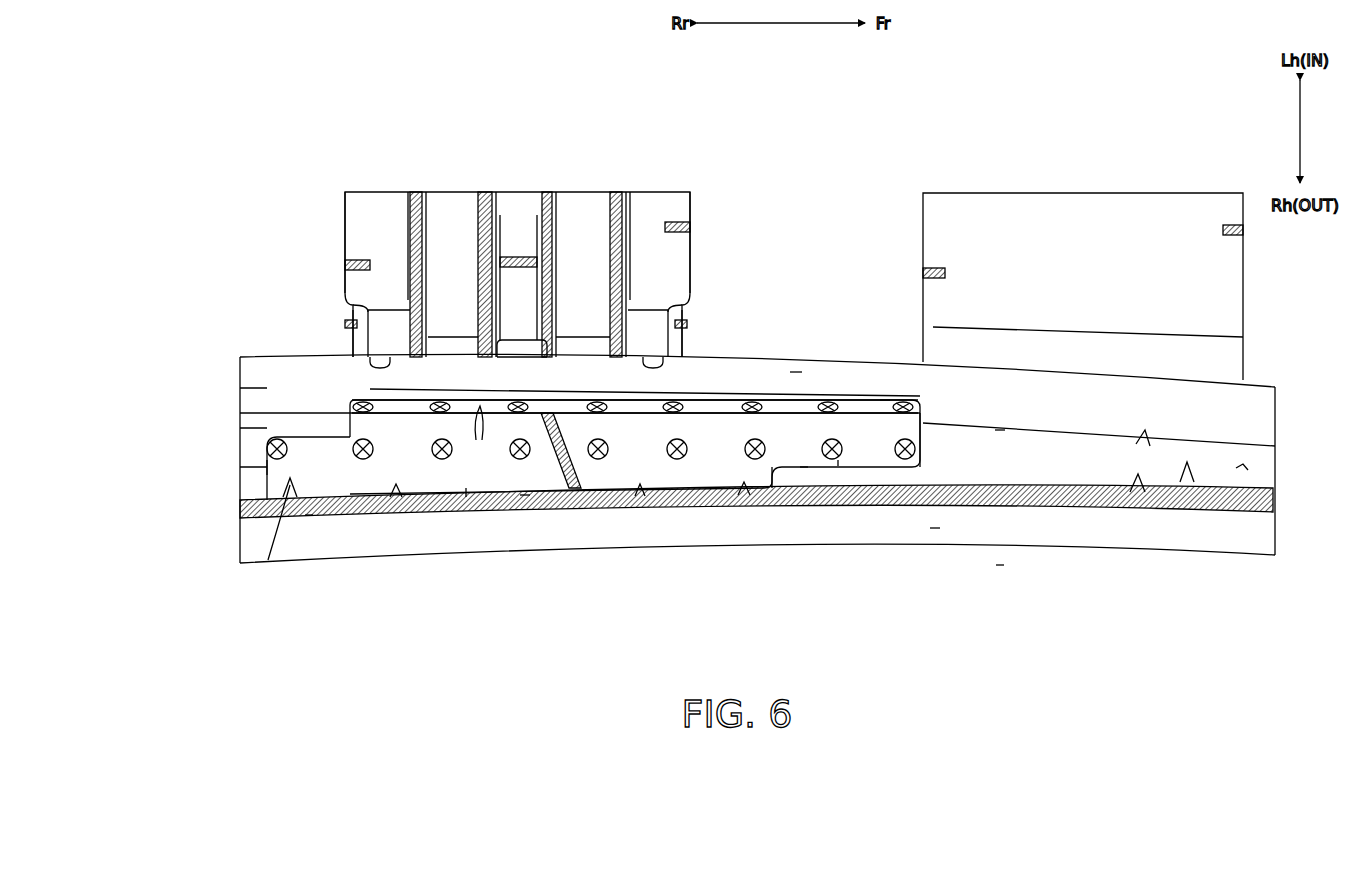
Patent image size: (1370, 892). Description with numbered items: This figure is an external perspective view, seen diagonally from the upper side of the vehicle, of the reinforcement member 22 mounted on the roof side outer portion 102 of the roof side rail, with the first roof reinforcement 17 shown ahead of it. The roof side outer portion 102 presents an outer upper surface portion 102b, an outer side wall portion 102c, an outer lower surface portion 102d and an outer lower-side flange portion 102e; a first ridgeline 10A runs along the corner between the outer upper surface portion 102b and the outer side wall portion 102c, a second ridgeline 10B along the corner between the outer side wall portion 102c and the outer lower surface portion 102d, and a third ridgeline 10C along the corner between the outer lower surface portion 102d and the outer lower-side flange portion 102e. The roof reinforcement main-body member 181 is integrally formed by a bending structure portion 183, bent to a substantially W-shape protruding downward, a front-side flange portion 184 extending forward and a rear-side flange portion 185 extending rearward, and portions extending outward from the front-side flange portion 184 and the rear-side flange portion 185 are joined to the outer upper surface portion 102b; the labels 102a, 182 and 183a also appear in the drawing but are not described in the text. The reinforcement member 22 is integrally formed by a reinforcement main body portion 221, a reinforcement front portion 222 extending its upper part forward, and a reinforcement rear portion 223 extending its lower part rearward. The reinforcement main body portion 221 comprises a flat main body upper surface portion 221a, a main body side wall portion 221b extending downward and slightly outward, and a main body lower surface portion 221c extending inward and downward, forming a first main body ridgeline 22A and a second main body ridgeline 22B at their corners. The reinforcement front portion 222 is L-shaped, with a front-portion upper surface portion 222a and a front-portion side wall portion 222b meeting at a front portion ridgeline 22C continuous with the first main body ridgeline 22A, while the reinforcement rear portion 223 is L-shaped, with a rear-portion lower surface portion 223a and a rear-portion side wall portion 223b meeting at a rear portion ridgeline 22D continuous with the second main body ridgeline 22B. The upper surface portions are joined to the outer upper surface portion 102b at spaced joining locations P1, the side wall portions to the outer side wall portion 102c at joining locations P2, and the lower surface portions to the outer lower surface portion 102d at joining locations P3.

The first ridgeline 10A is at (1145, 440).
The second ridgeline 10B is at (1187, 465).
The third ridgeline 10C is at (1138, 478).
The first roof reinforcement 17 is at (920, 237).
The reinforcement member 22 is at (566, 452).
The first main body ridgeline 22A is at (475, 436).
The second main body ridgeline 22B is at (466, 497).
The front portion ridgeline 22C is at (838, 462).
The rear portion ridgeline 22D is at (268, 560).
The roof side outer portion 102 is at (1100, 548).
The upper surface of body panel 102a is at (800, 372).
The outer upper surface portion 102b is at (1000, 430).
The outer side wall portion 102c is at (1243, 464).
The outer lower surface portion 102d is at (1000, 565).
The outer lower-side flange portion 102e is at (935, 528).
The roof reinforcement main-body member 181 is at (693, 252).
The housing leg 182 is at (350, 326).
The bending structure portion 183 is at (445, 205).
The connecting portion of partition wall 183a is at (518, 232).
The front-side flange portion 184 is at (642, 207).
The rear-side flange portion 185 is at (391, 204).
The reinforcement main body portion 221 is at (712, 393).
The main body upper surface portion 221a is at (563, 400).
The main body side wall portion 221b is at (588, 470).
The main body lower surface portion 221c is at (526, 495).
The reinforcement front portion 222 is at (870, 495).
The front-portion upper surface portion 222a is at (890, 400).
The front-portion side wall portion 222b is at (805, 466).
The reinforcement rear portion 223 is at (307, 437).
The rear-portion lower surface portion 223a is at (310, 515).
The rear-portion side wall portion 223b is at (265, 467).
The joining locations P1 is at (375, 390).
The joining locations P2 is at (267, 445).
The joining locations P3 is at (405, 510).